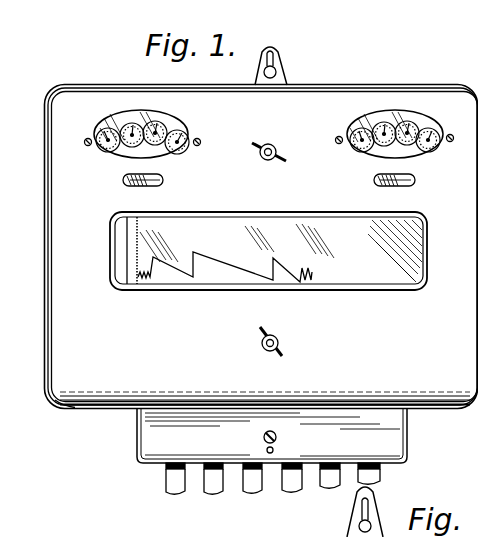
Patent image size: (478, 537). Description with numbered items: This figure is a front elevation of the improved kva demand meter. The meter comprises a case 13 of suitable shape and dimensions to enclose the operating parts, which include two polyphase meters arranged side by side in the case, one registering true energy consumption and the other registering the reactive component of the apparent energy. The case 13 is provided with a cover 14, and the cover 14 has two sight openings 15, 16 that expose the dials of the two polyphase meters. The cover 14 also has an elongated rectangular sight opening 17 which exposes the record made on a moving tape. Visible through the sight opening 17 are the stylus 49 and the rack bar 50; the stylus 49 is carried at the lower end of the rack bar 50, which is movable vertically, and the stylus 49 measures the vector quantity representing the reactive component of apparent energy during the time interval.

The case 13 is at (45, 375).
The cover 14 is at (78, 403).
The sight opening 15 is at (349, 133).
The sight opening 16 is at (182, 126).
The elongated rectangular sight opening 17 is at (415, 288).
The stylus 49 is at (133, 276).
The rack bar 50 is at (128, 239).